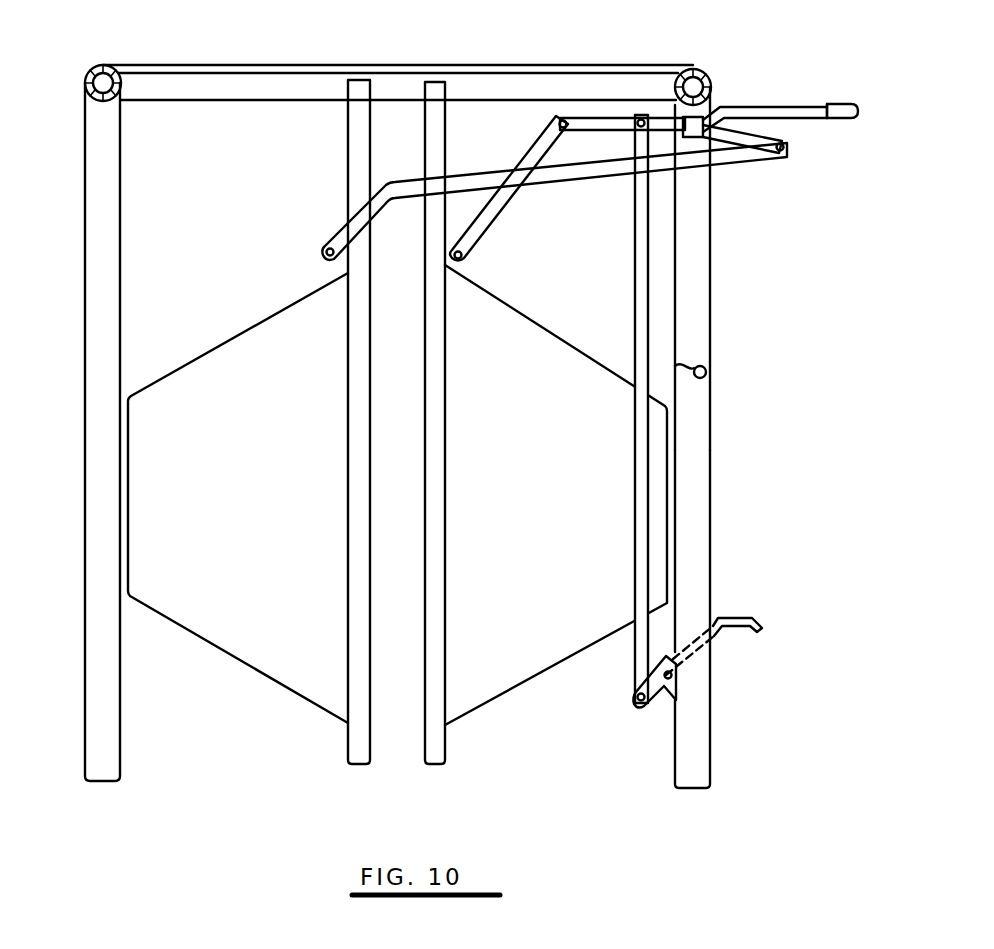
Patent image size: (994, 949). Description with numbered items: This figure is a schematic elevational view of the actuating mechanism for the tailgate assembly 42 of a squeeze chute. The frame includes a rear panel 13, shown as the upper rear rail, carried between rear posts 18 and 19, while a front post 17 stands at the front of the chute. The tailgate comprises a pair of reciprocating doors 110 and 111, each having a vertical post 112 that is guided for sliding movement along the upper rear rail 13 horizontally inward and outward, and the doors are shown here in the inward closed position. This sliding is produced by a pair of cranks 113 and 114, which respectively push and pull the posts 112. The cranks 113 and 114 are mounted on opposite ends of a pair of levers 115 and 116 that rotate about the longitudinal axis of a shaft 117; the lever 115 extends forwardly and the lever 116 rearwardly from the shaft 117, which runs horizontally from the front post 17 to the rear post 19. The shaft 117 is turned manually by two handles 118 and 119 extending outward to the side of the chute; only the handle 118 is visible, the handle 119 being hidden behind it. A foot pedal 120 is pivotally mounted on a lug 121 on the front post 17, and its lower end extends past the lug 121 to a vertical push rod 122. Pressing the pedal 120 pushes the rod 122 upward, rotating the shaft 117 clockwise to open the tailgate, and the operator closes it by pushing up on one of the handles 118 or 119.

The rear panel 13 is at (248, 63).
The post 18 is at (105, 322).
The post 19 is at (697, 297).
The post 17 is at (695, 535).
The tailgate assembly 42 is at (374, 398).
The vertical post 112 is at (360, 143).
The reciprocating door 110 is at (257, 374).
The reciprocating door 111 is at (531, 366).
The crank 113 is at (600, 168).
The crank 114 is at (493, 218).
The lever 115 is at (597, 122).
The lever 116 is at (760, 136).
The shaft 117 is at (702, 117).
The manual handle 118 is at (845, 100).
The manual handle 119 is at (836, 98).
The foot pedal 120 is at (761, 613).
The lug 121 is at (663, 706).
The vertical push rod 122 is at (631, 489).